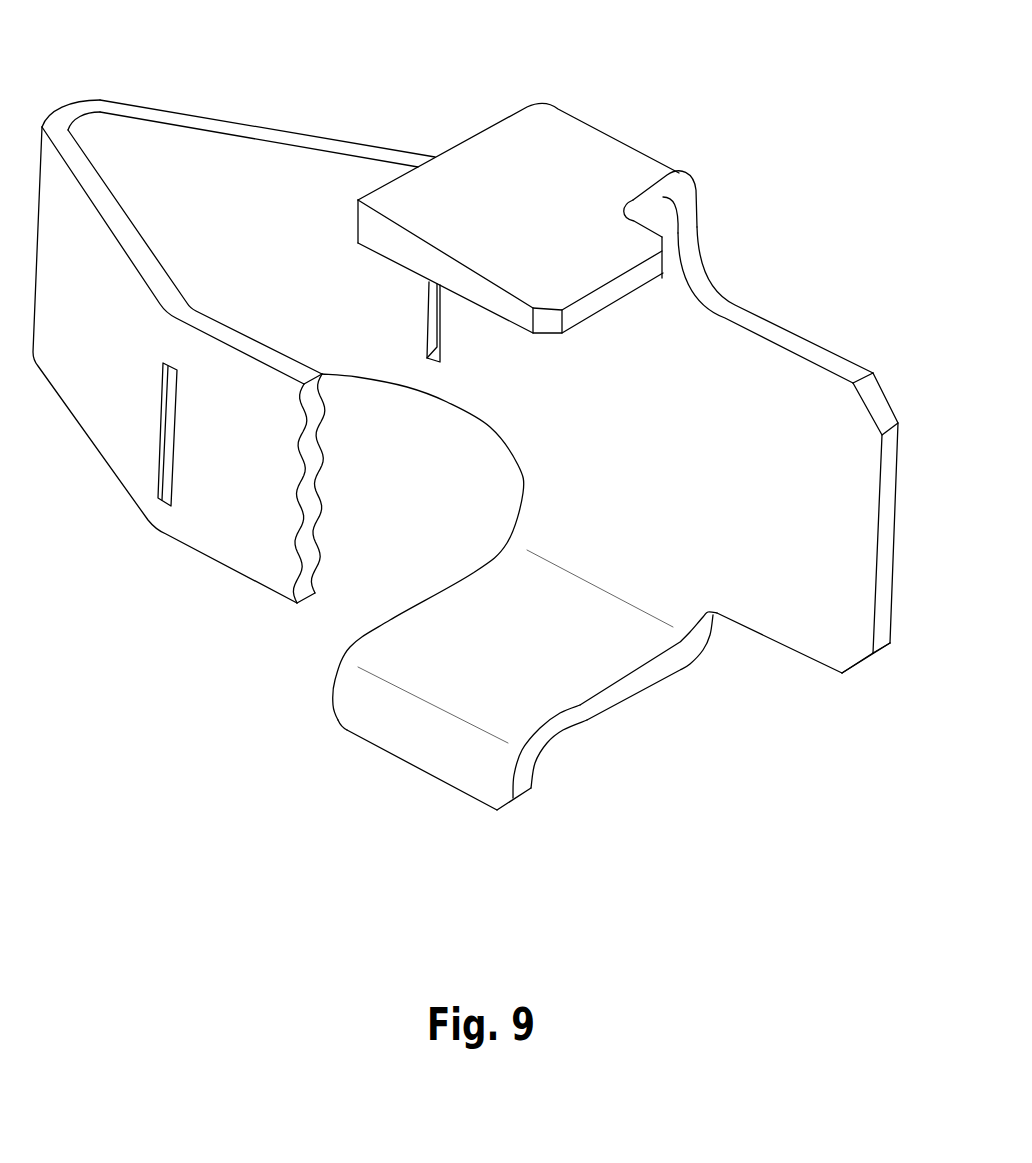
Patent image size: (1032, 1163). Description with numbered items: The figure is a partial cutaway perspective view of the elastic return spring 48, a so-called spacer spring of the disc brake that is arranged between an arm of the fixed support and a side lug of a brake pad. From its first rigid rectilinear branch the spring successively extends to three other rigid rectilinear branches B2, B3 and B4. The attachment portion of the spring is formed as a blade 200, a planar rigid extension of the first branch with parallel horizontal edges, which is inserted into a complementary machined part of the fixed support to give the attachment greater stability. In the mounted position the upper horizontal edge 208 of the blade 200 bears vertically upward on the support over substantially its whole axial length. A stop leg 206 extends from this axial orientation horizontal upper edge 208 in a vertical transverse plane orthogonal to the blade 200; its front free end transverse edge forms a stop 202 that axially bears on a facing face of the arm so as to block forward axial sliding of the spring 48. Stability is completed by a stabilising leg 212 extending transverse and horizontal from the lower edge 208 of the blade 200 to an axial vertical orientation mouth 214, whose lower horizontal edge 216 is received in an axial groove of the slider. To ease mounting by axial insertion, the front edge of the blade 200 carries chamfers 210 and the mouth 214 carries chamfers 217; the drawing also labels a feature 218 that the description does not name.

The elastic return spring 48 is at (440, 110).
The rigid rectilinear branch B2 is at (237, 120).
The rigid rectilinear branch B3 is at (113, 343).
The rigid rectilinear branch B4 is at (478, 343).
The blade 200 is at (810, 452).
The stop 202 is at (603, 293).
The stop leg 206 is at (543, 248).
The horizontal edge 208 is at (767, 327).
The chamfers 210 is at (880, 402).
The stabilising leg 212 is at (520, 682).
The mouth 214 is at (523, 783).
The lower horizontal edge 216 is at (447, 785).
The chamfers 217 is at (335, 717).
The contact surface 218 is at (420, 747).